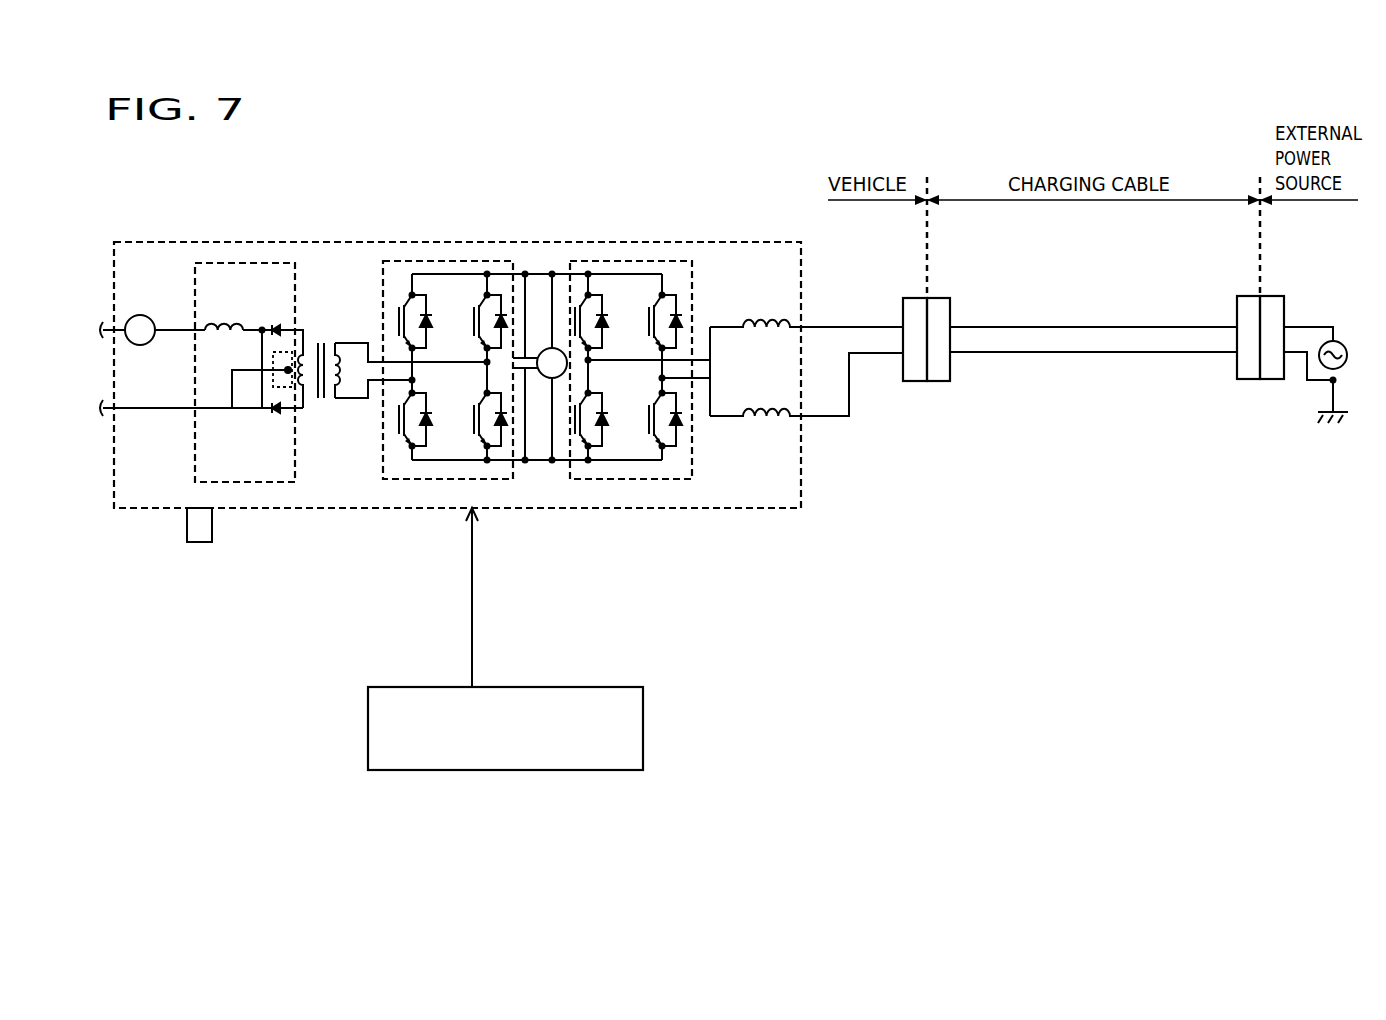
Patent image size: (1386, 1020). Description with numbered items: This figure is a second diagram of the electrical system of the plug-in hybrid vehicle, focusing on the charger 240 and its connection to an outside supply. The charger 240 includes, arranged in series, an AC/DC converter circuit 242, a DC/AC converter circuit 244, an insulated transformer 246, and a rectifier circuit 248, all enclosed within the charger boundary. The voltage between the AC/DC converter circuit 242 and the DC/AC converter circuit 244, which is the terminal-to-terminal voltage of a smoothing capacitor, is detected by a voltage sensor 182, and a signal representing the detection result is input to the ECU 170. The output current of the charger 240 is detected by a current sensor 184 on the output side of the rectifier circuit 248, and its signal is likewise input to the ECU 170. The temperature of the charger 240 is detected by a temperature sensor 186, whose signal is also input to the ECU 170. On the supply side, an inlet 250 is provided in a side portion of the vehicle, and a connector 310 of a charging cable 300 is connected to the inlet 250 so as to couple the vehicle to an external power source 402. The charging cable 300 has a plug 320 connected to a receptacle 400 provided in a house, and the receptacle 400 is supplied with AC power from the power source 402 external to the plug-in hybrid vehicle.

The ECU 170 is at (605, 772).
The voltage sensor 182 is at (548, 378).
The current sensor 184 is at (140, 315).
The temperature sensor 186 is at (200, 542).
The charger 240 is at (390, 508).
The AC/DC converter circuit 242 is at (622, 481).
The DC/AC converter circuit 244 is at (503, 481).
The insulated transformer 246 is at (330, 413).
The rectifier circuit 248 is at (247, 481).
The inlet 250 is at (918, 298).
The charging cable 300 is at (1088, 291).
The connector 310 is at (935, 298).
The plug 320 is at (1252, 296).
The receptacle 400 is at (1265, 379).
The external power source 402 is at (1338, 340).